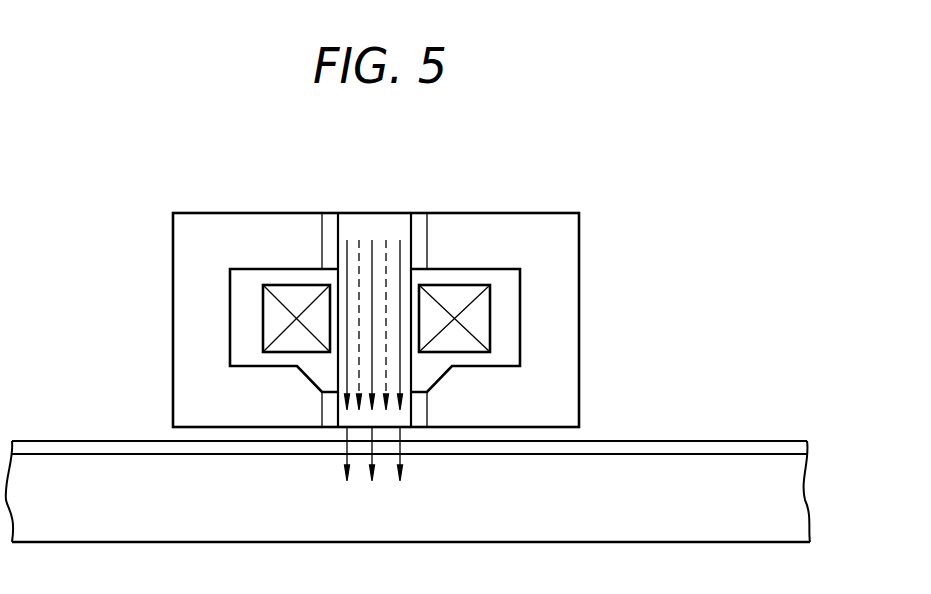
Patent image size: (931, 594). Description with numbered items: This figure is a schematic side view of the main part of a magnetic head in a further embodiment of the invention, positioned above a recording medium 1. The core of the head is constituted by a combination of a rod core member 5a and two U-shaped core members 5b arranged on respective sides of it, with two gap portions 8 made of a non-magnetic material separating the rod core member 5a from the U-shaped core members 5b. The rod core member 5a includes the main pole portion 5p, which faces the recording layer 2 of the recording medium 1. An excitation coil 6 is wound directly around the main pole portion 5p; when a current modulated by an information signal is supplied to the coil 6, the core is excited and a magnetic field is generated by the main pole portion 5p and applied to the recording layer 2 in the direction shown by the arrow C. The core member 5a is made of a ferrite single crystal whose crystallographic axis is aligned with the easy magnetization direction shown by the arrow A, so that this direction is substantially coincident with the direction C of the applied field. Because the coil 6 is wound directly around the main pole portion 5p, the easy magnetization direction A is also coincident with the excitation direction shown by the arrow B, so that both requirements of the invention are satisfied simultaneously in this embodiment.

The recording medium 1 is at (835, 430).
The recording layer 2 is at (753, 453).
The rod core member 5a is at (353, 222).
The U-shaped core member 5b is at (178, 255).
The main pole portion 5p is at (353, 373).
The coil 6 is at (288, 293).
The gap portion 8 is at (330, 415).
The easy magnetization direction A is at (400, 240).
The excitation direction B is at (385, 240).
The direction of the magnetic field applied to the recording medium C is at (347, 448).